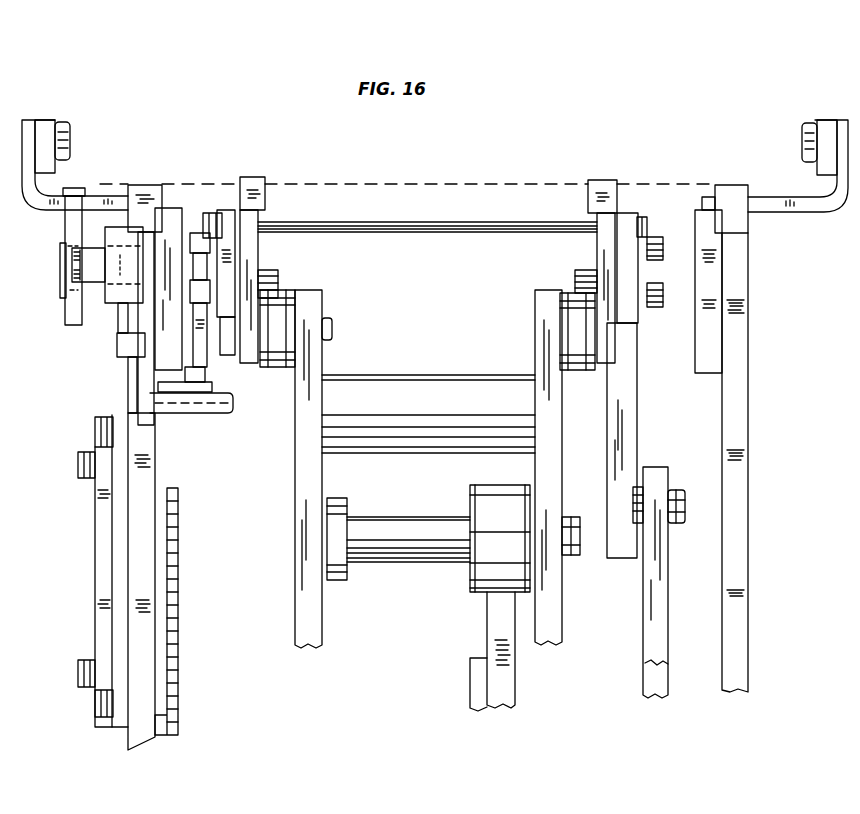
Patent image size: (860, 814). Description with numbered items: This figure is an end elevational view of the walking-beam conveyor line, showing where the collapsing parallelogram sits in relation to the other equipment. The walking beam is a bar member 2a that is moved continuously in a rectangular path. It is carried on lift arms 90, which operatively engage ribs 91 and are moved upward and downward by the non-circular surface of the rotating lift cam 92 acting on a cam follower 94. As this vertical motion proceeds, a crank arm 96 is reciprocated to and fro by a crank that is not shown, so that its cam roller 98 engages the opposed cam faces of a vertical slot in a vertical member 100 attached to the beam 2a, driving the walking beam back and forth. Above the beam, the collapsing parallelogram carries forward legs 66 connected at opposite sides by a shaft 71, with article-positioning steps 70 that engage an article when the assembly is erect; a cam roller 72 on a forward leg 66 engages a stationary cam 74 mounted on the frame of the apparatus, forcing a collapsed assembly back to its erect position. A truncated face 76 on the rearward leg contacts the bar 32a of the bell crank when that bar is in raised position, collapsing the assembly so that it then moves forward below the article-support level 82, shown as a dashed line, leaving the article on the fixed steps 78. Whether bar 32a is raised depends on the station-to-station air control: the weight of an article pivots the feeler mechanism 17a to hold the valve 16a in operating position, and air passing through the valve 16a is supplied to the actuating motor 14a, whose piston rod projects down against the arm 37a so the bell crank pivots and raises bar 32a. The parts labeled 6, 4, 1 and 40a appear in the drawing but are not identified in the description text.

The hook bracket 6 is at (27, 120).
The article-support level 82 is at (358, 184).
The fixed steps 78 is at (147, 186).
The frame bar 4 is at (128, 214).
The side plate 1 is at (172, 218).
The feeler mechanism 17a is at (64, 231).
The valve 16a is at (62, 296).
The actuating motor 14a is at (115, 305).
The arm 37a is at (117, 346).
The rod 40a is at (128, 393).
The cam roller 72 is at (195, 280).
The forward legs 66 is at (226, 232).
The truncated face 76 is at (233, 357).
The stationary cam 74 is at (202, 353).
The bar 32a is at (212, 416).
The article-positioning steps 70 is at (255, 183).
The walking beam 2a is at (259, 256).
The shaft 71 is at (440, 232).
The ribs 91 is at (279, 280).
The lift arms 90 is at (323, 482).
The cam follower 94 is at (478, 596).
The lift cam 92 is at (516, 672).
The vertical member 100 is at (625, 560).
The cam roller 98 is at (635, 492).
The crank arm 96 is at (668, 641).